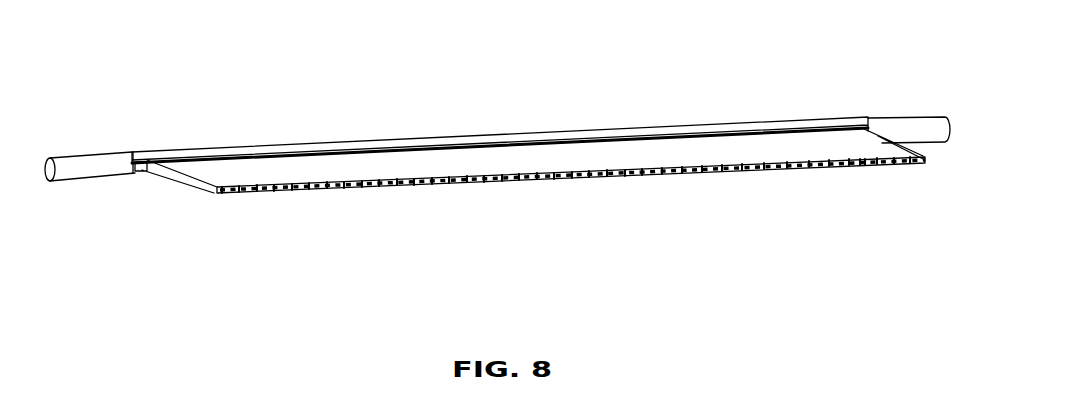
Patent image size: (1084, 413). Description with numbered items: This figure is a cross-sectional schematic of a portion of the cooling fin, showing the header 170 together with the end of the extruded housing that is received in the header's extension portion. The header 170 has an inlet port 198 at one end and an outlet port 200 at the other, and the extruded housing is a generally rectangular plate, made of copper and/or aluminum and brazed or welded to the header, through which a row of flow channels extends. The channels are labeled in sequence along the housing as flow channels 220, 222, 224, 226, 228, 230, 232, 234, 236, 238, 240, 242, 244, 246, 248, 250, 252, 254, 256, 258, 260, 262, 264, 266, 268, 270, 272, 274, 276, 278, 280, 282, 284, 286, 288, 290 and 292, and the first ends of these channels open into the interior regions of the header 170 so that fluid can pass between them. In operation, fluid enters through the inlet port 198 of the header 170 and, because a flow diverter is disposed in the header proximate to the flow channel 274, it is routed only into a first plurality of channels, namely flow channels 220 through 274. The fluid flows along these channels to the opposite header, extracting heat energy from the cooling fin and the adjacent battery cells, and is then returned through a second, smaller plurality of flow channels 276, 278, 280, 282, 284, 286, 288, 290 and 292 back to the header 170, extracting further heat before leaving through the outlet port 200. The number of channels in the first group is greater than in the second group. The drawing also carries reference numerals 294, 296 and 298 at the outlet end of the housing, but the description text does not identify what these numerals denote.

The inlet port 198 is at (80, 165).
The header 170 is at (297, 150).
The outlet port 200 is at (932, 122).
The flow channel 220 is at (225, 193).
The flow channel 222 is at (242, 192).
The flow channel 224 is at (260, 191).
The flow channel 226 is at (277, 191).
The flow channel 228 is at (295, 190).
The flow channel 230 is at (312, 189).
The flow channel 232 is at (330, 188).
The flow channel 234 is at (347, 188).
The flow channel 236 is at (365, 187).
The flow channel 238 is at (382, 186).
The flow channel 240 is at (400, 185).
The flow channel 242 is at (417, 185).
The flow channel 244 is at (435, 184).
The flow channel 246 is at (452, 183).
The flow channel 248 is at (470, 182).
The flow channel 250 is at (487, 182).
The flow channel 252 is at (505, 181).
The flow channel 254 is at (522, 180).
The flow channel 256 is at (540, 179).
The flow channel 258 is at (557, 179).
The flow channel 260 is at (575, 178).
The flow channel 262 is at (592, 177).
The flow channel 264 is at (610, 176).
The flow channel 266 is at (628, 176).
The flow channel 268 is at (645, 169).
The flow channel 270 is at (665, 168).
The flow channel 272 is at (685, 167).
The flow channel 274 is at (705, 166).
The flow channel 276 is at (725, 165).
The flow channel 278 is at (745, 165).
The flow channel 280 is at (767, 164).
The flow channel 282 is at (790, 163).
The flow channel 284 is at (812, 162).
The flow channel 286 is at (832, 161).
The flow channel 288 is at (852, 160).
The flow channel 290 is at (868, 159).
The flow channel 292 is at (863, 166).
The opening 294 is at (880, 165).
The opening 296 is at (897, 164).
The opening 298 is at (913, 164).